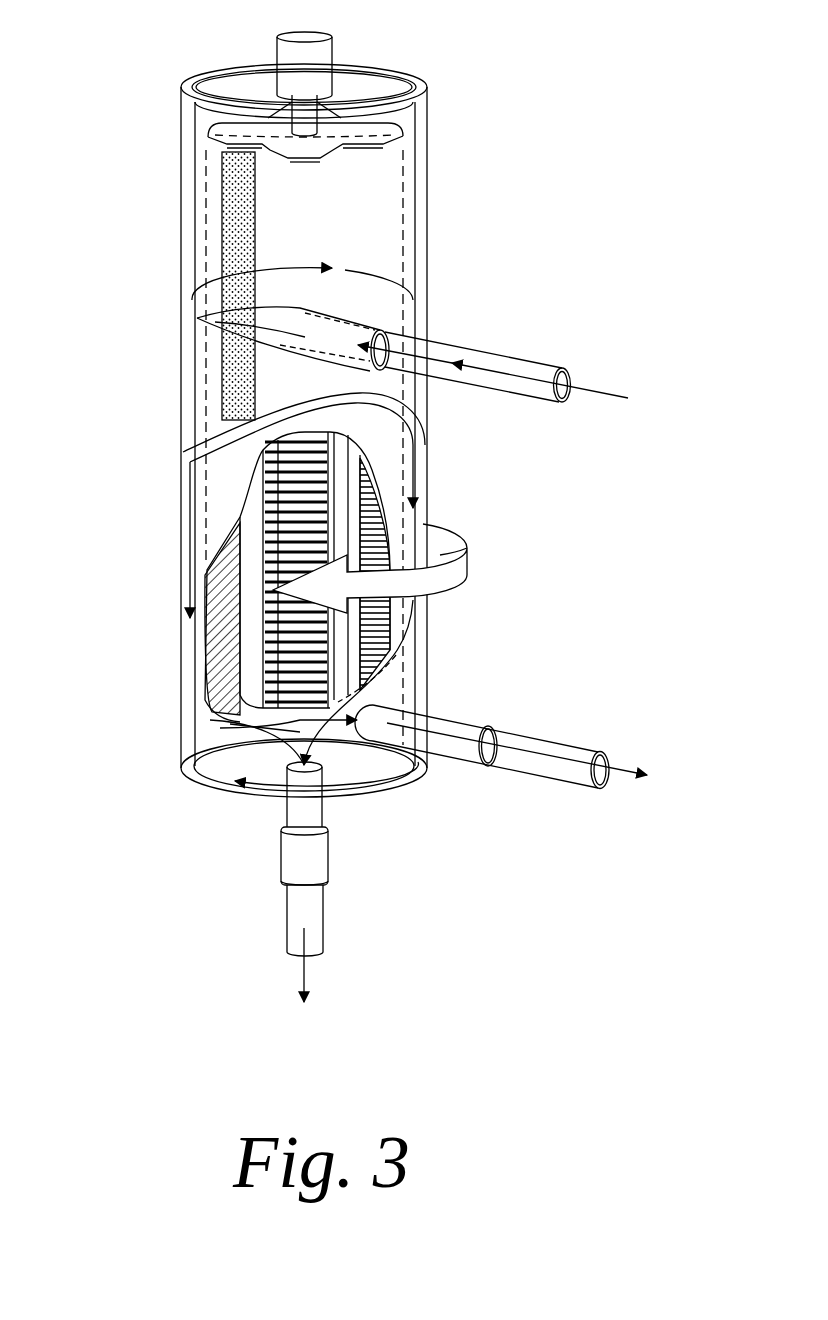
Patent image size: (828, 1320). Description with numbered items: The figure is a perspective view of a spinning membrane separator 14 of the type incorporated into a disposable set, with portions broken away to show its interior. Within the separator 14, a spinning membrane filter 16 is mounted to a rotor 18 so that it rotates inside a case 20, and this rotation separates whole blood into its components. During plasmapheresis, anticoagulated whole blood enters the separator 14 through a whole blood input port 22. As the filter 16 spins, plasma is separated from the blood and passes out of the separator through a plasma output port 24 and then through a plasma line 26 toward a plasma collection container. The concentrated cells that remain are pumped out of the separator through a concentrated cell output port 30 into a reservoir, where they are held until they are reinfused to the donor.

The separator 14 is at (472, 190).
The spinning membrane filter 16 is at (217, 494).
The rotor 18 is at (355, 474).
The case 20 is at (180, 142).
The whole blood input port 22 is at (552, 362).
The plasma output port 24 is at (287, 858).
The plasma line 26 is at (323, 930).
The concentrated cell output port 30 is at (477, 718).